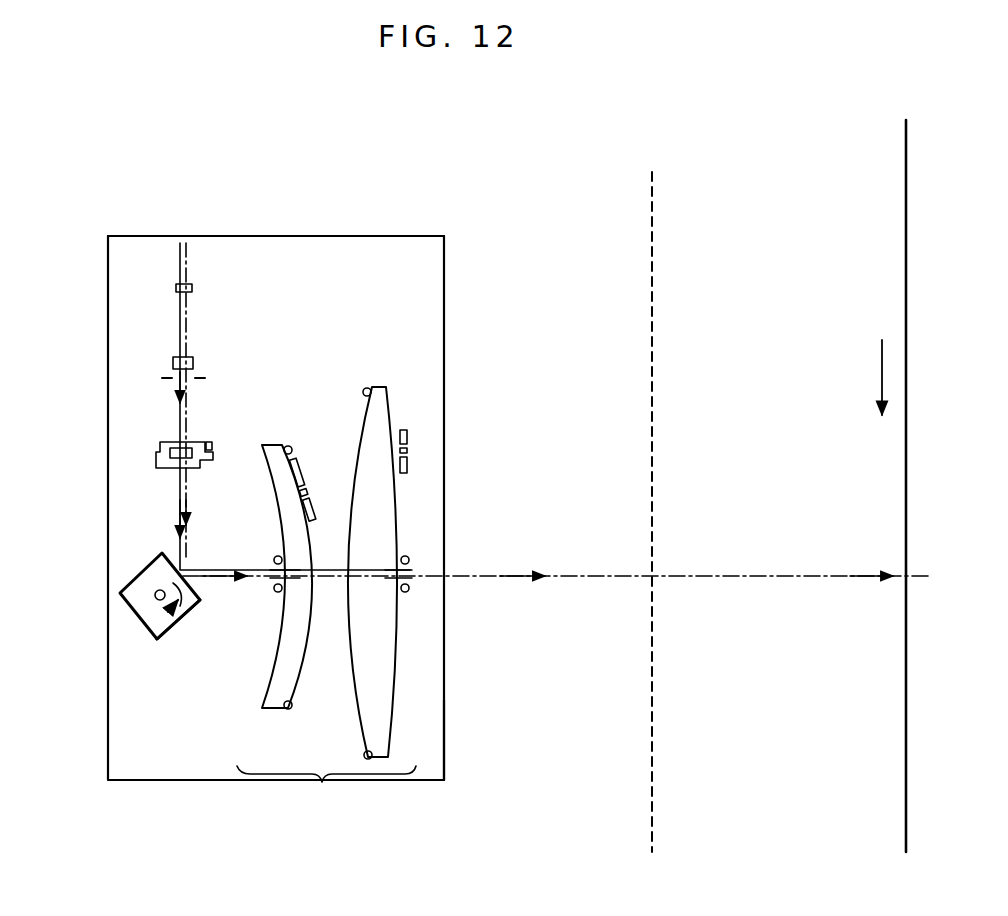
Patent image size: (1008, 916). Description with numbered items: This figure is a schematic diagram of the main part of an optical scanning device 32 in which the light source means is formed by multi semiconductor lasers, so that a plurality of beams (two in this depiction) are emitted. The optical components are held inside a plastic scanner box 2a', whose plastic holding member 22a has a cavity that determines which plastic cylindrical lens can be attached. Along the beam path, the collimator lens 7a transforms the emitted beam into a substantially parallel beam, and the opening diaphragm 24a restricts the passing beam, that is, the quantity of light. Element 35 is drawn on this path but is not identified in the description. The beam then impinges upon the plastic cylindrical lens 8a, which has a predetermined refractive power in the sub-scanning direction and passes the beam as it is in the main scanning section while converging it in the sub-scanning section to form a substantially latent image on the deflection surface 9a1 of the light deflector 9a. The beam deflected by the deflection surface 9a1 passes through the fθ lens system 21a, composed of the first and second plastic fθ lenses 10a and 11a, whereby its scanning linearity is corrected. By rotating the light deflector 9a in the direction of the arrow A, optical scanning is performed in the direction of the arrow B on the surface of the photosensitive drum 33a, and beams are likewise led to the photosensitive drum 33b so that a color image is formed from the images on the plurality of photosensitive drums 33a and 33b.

The plastic scanner box 2a' is at (285, 203).
The plastic holding member 22a is at (432, 298).
The optical scanning device 32 is at (445, 732).
The collimating element 35 is at (188, 284).
The collimator lens 7a is at (200, 355).
The opening diaphragm 24a is at (168, 378).
The plastic cylindrical lens 8a is at (165, 448).
The light deflector 9a is at (148, 612).
The deflection surface 9a1 is at (200, 598).
The direction of rotation of the light deflector A is at (178, 610).
The first plastic fθ lens 10a is at (272, 440).
The second plastic fθ lens 11a is at (390, 398).
The fθ lens system 21a is at (326, 792).
The photosensitive drum 33b is at (653, 195).
The photosensitive drum 33a is at (905, 162).
The scanning direction B is at (878, 378).